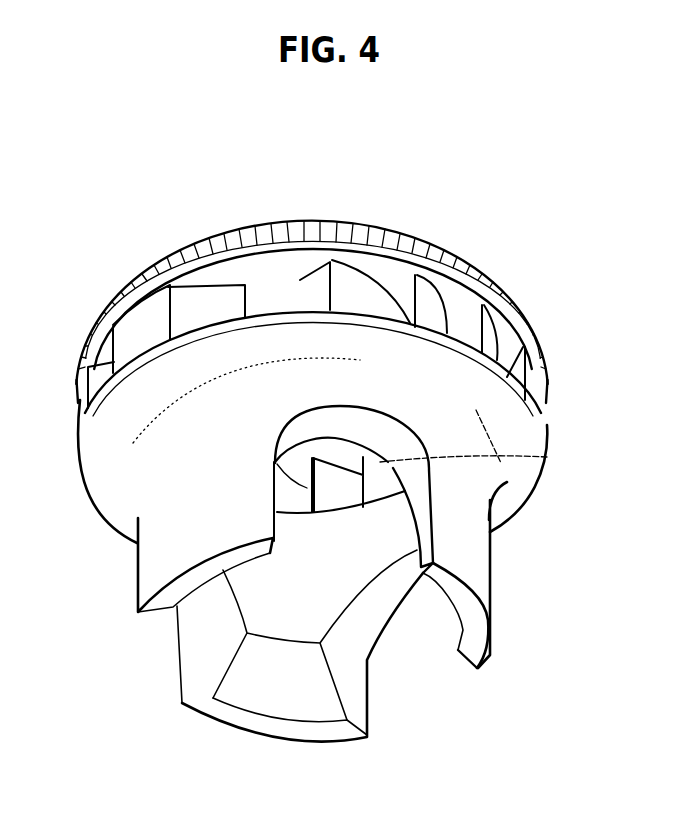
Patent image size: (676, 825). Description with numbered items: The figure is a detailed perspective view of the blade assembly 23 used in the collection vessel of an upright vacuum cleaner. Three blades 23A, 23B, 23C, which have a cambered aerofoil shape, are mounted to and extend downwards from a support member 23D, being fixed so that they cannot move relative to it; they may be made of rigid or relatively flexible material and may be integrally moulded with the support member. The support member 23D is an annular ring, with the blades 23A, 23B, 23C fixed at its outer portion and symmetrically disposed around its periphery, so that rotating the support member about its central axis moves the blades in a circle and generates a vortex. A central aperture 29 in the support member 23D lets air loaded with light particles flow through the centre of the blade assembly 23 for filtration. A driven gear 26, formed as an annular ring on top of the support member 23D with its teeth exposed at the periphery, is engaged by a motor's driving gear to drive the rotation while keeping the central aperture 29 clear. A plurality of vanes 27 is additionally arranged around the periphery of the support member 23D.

The driven gear 26 is at (356, 221).
The vanes 27 is at (430, 300).
The support member 23D is at (510, 370).
The central aperture 29 is at (547, 457).
The blade assembly 23 is at (497, 630).
The blade 23A is at (484, 588).
The blade 23B is at (348, 700).
The blade 23C is at (147, 571).